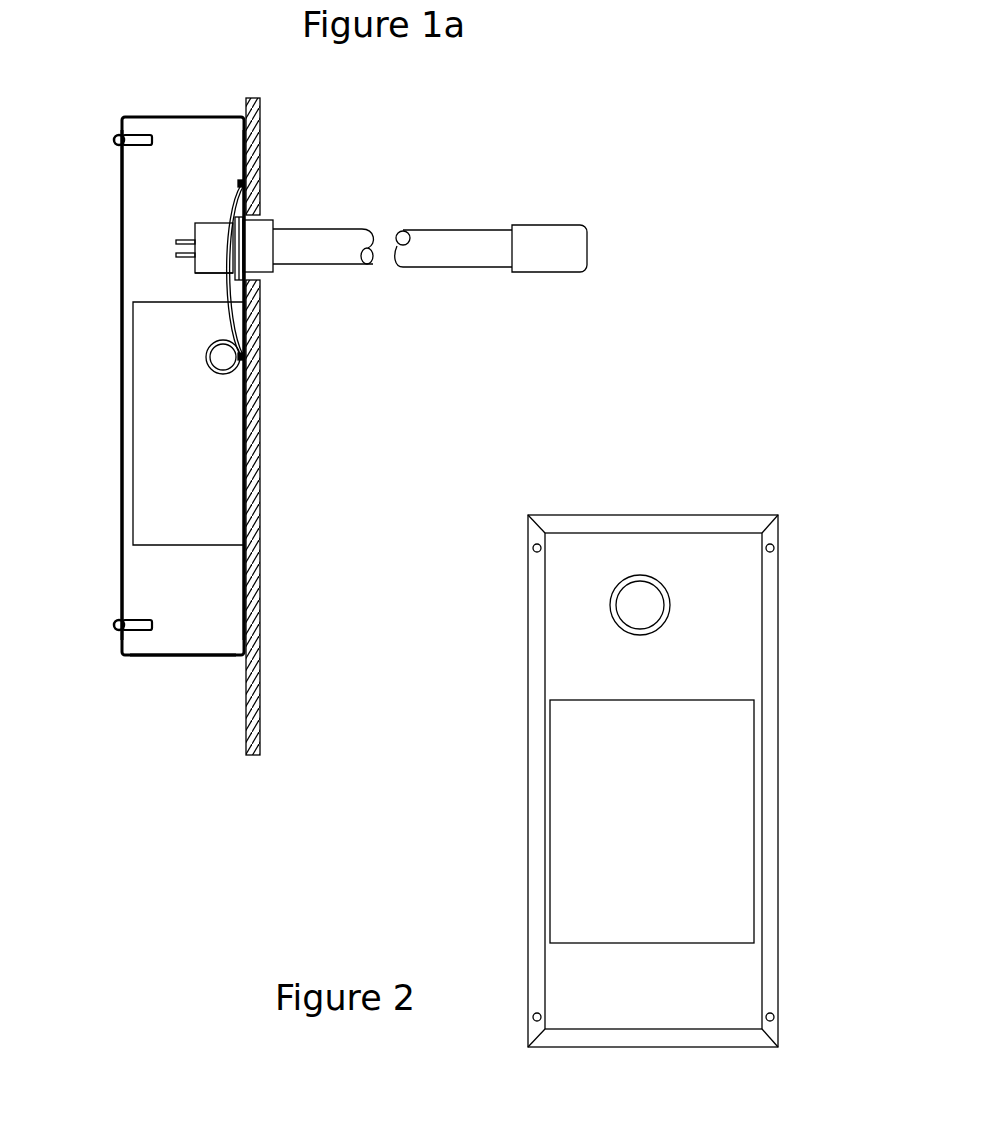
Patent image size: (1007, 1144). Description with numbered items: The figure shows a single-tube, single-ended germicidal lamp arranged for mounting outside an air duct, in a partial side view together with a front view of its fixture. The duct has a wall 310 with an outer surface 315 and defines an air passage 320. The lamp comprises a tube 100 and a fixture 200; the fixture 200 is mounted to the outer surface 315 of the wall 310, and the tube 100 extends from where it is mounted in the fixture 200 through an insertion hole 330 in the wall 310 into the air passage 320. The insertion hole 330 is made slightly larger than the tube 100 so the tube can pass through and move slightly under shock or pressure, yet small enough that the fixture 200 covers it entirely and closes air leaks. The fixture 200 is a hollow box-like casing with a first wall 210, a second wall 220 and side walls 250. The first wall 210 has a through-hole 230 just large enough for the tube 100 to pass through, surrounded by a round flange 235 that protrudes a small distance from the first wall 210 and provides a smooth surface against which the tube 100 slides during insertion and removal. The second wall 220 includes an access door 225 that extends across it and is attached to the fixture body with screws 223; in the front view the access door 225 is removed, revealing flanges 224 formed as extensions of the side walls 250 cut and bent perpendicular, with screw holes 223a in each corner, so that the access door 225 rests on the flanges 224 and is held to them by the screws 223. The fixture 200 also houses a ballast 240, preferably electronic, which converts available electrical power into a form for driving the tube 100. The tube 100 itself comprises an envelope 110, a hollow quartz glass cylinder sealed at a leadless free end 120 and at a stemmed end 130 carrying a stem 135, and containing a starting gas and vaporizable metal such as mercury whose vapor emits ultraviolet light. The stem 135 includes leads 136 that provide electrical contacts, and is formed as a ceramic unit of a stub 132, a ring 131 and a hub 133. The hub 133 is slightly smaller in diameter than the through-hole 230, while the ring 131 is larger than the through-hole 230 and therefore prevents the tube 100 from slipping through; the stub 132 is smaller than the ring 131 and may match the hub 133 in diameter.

In FIG. 1A, the tube 100 is at (330, 275).
In FIG. 1A, the envelope 110 is at (450, 275).
In FIG. 1A, the leadless free end 120 is at (578, 227).
In FIG. 1A, the stemmed end 130 is at (215, 218).
In FIG. 1A, the ring 131 is at (237, 250).
In FIG. 1A, the stub 132 is at (203, 242).
In FIG. 1A, the hub 133 is at (263, 233).
In FIG. 1A, the stem 135 is at (200, 266).
In FIG. 1A, the leads 136 is at (176, 252).
In FIG. 1A, the fixture 200 is at (121, 655).
In FIG. 2, the fixture 200 is at (828, 739).
In FIG. 1A, the first wall 210 is at (243, 636).
In FIG. 2, the first wall 210 is at (578, 562).
In FIG. 1A, the second wall 220 is at (122, 560).
In FIG. 1A, the screws 223 is at (118, 135).
In FIG. 2, the screw holes 223a is at (774, 546).
In FIG. 2, the flanges 224 is at (772, 855).
In FIG. 1A, the access door 225 is at (122, 317).
In FIG. 1A, the through-hole 230 is at (243, 277).
In FIG. 2, the through-hole 230 is at (643, 603).
In FIG. 2, the flange 235 is at (668, 606).
In FIG. 1A, the ballast 240 is at (163, 410).
In FIG. 2, the ballast 240 is at (720, 777).
In FIG. 1A, the side walls 250 is at (143, 656).
In FIG. 1A, the wall 310 is at (260, 440).
In FIG. 1A, the outer surface 315 is at (253, 693).
In FIG. 1A, the air passage 320 is at (405, 409).
In FIG. 1A, the insertion hole 330 is at (262, 221).